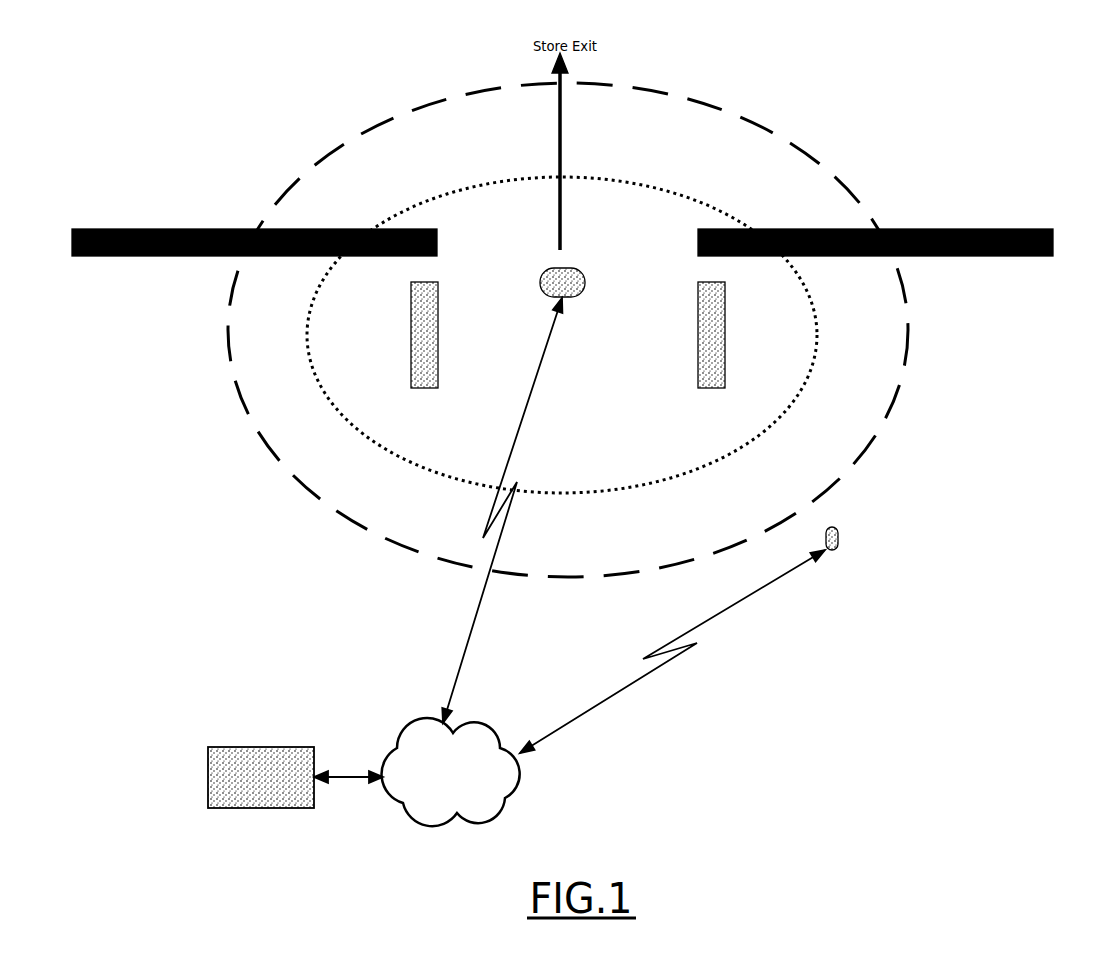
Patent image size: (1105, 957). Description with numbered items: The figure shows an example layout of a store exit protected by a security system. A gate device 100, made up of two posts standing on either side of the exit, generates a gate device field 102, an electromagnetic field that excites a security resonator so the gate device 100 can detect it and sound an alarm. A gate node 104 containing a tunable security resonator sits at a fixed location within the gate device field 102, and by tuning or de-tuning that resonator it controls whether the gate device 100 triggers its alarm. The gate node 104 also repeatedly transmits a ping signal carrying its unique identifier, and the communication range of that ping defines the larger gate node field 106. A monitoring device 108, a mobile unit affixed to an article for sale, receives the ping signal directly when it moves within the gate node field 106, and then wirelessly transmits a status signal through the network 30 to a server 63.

The gate device 100 is at (568, 334).
The gate device field 102 is at (637, 290).
The gate node 104 is at (476, 345).
The gate node field 106 is at (641, 330).
The monitoring device 108 is at (949, 523).
The network 30 is at (457, 764).
The server 63 is at (267, 767).